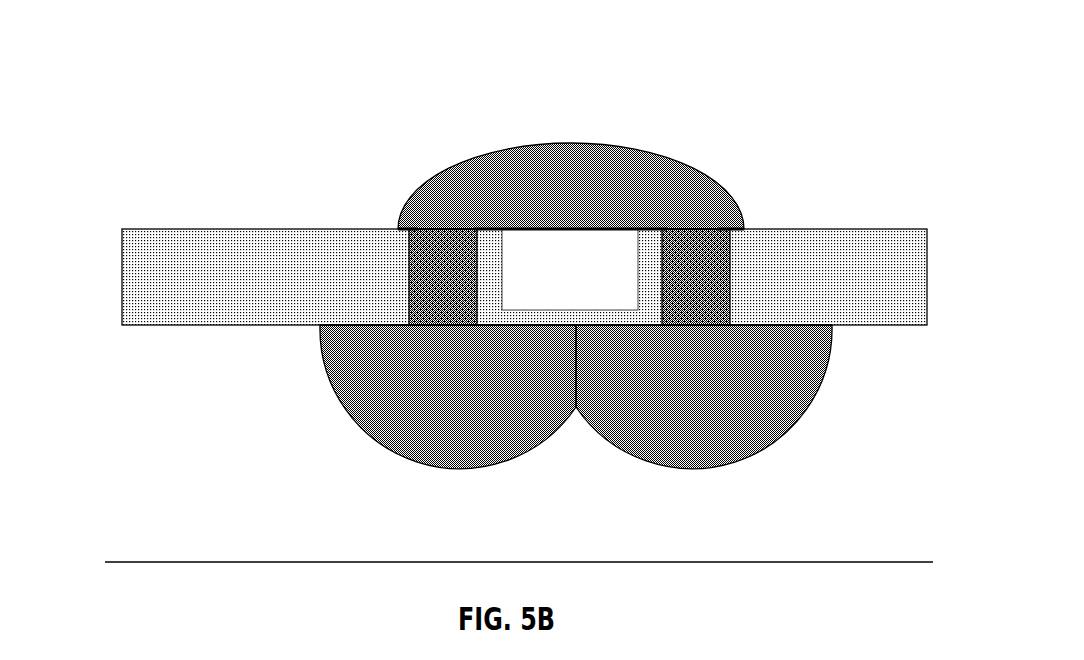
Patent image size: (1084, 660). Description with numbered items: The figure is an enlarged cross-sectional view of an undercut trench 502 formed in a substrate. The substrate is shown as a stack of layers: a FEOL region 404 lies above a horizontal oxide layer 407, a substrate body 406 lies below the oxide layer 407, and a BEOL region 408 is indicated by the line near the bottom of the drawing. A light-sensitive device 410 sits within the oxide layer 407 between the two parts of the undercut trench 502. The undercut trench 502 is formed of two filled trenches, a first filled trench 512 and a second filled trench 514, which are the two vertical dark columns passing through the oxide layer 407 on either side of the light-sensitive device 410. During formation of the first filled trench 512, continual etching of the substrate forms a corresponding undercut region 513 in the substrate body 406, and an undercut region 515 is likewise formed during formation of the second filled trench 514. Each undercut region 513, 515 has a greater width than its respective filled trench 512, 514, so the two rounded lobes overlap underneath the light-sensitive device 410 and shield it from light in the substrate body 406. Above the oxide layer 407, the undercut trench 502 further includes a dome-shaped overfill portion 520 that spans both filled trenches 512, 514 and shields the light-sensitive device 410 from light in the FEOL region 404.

The undercut trench 502 is at (576, 241).
The FEOL region 404 is at (163, 152).
The oxide layer 407 is at (122, 252).
The substrate body 406 is at (163, 377).
The BEOL region 408 is at (140, 600).
The overfill portion 520 is at (525, 143).
The light-sensitive device 410 is at (593, 255).
The first filled trench 512 is at (402, 248).
The second filled trench 514 is at (732, 254).
The undercut region 513 is at (335, 398).
The undercut region 515 is at (787, 430).